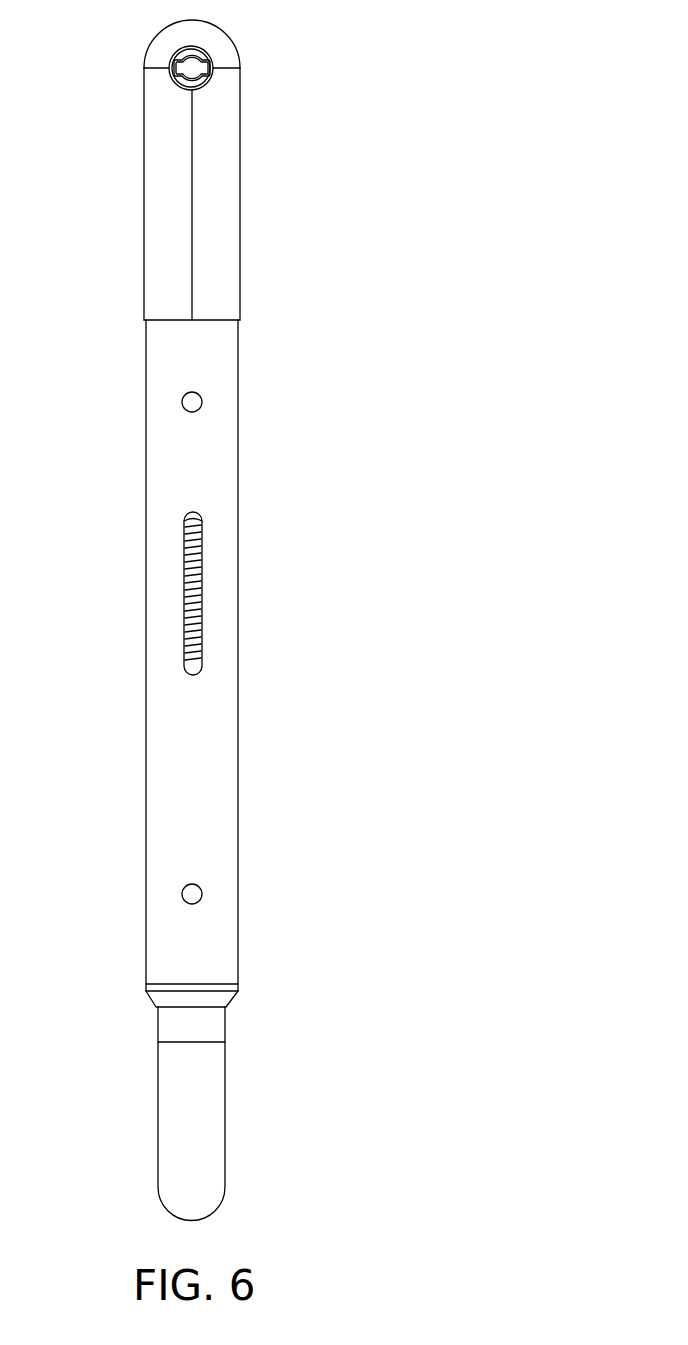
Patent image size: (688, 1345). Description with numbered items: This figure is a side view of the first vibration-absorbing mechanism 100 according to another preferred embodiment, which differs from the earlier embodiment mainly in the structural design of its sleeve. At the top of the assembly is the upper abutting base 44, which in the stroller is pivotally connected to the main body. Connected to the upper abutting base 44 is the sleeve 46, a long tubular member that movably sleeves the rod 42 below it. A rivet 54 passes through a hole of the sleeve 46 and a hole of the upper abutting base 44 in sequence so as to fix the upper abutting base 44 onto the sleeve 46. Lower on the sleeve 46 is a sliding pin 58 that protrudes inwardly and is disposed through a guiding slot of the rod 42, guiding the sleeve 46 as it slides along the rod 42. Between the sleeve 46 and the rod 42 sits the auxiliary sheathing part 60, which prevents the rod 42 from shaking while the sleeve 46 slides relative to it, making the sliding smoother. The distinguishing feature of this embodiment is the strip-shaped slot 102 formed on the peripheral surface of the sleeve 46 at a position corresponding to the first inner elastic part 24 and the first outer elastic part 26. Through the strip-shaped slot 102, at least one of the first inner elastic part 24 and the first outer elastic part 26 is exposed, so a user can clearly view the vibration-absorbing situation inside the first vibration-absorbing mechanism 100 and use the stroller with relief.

The first vibration-absorbing mechanism 100 is at (458, 88).
The upper abutting base 44 is at (222, 180).
The sleeve 46 is at (233, 420).
The rivet 54 is at (190, 398).
The sliding pin 58 is at (190, 891).
The strip-shaped slot 102 is at (207, 574).
The first inner elastic part 24 is at (190, 600).
The first outer elastic part 26 is at (190, 556).
The auxiliary sheathing part 60 is at (222, 1000).
The rod 42 is at (205, 1081).